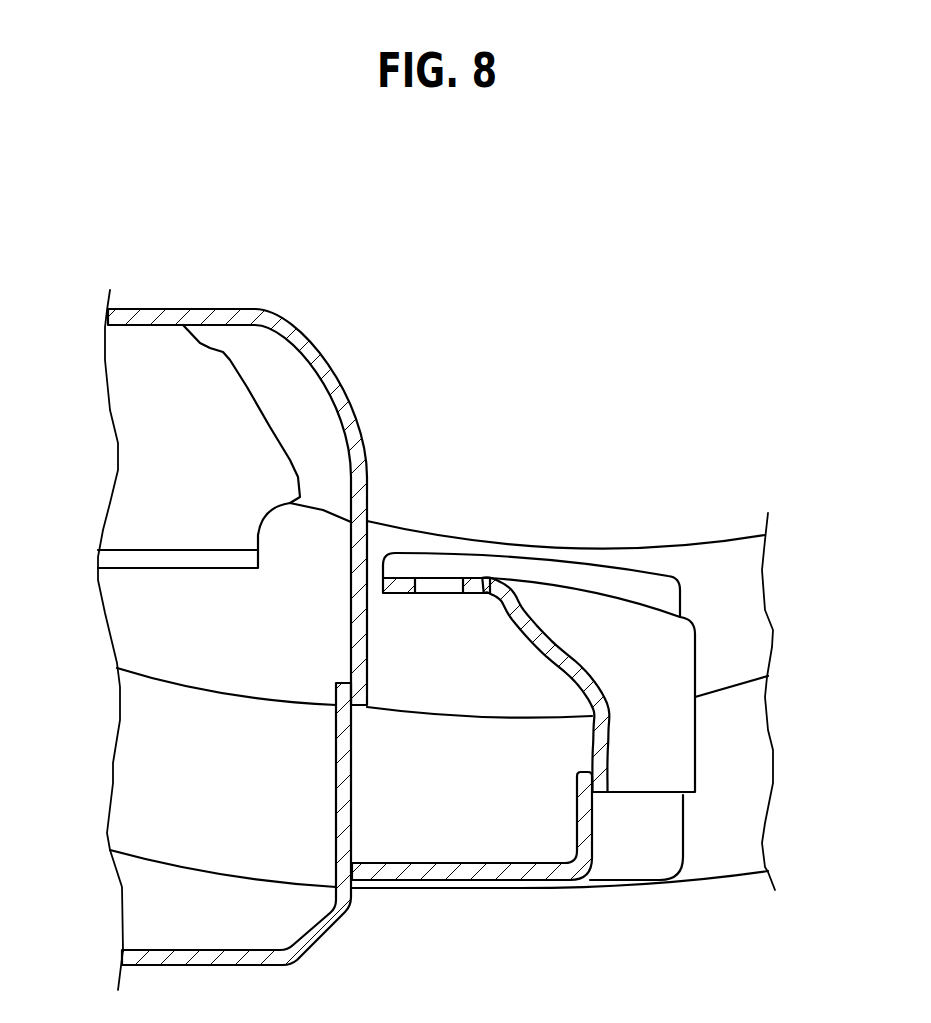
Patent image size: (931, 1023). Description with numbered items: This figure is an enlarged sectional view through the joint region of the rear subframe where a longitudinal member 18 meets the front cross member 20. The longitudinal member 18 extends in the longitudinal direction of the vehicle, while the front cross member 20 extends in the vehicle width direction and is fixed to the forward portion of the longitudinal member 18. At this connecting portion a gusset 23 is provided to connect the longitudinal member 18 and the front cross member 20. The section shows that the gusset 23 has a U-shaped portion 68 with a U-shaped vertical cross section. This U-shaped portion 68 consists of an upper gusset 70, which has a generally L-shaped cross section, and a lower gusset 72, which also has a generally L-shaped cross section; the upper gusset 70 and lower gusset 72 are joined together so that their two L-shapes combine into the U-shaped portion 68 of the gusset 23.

The longitudinal member 18 is at (701, 528).
The front cross member 20 is at (245, 292).
The gusset 23 is at (531, 546).
The U-shaped portion 68 is at (567, 628).
The upper gusset 70 is at (471, 577).
The lower gusset 72 is at (480, 881).